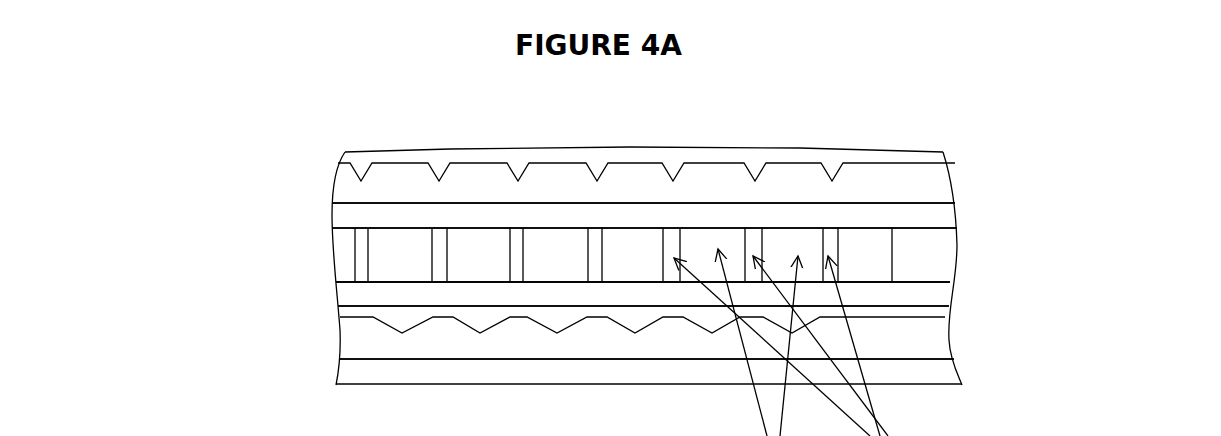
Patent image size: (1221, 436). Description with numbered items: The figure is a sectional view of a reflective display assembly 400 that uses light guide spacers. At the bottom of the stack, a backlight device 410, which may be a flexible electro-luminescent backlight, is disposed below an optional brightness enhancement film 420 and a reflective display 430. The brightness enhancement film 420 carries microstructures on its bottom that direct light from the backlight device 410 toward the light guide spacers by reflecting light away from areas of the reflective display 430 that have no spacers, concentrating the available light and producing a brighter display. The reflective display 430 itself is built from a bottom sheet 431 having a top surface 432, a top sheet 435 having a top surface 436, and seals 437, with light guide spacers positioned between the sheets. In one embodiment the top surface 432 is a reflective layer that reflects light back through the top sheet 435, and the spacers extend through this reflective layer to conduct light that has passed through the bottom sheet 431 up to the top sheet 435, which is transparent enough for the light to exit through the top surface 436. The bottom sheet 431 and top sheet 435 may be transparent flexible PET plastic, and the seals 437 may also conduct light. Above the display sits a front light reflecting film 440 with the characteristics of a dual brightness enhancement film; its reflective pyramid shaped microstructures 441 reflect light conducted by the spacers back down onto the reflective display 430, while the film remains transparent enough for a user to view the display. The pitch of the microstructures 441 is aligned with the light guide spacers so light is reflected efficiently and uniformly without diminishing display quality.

The reflective display assembly 400 is at (150, 68).
The backlight device 410 is at (349, 379).
The brightness enhancement film 420 is at (341, 313).
The reflective display 430 is at (328, 203).
The bottom sheet 431 is at (939, 300).
The top surface of bottom sheet 432 is at (939, 281).
The top sheet 435 is at (948, 222).
The top surface of top sheet 436 is at (939, 204).
The seals 437 is at (906, 261).
The front light reflecting film 440 is at (339, 159).
The reflective pyramid shaped microstructures 441 is at (681, 161).